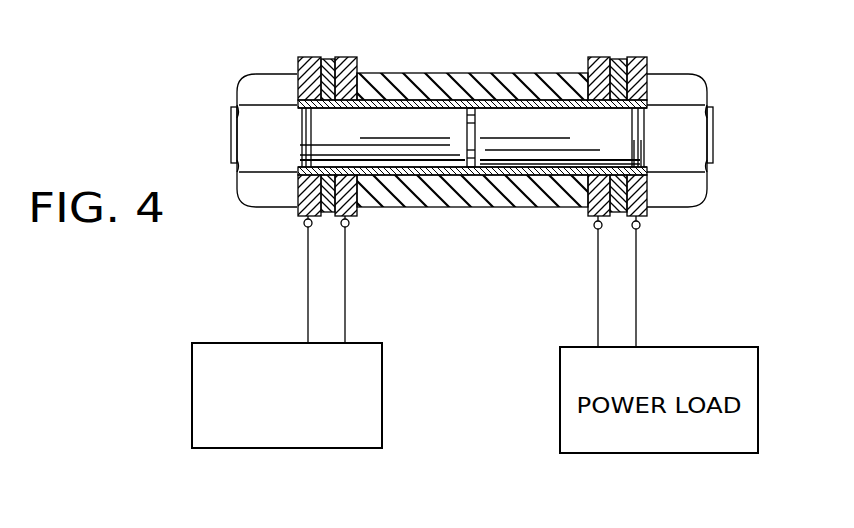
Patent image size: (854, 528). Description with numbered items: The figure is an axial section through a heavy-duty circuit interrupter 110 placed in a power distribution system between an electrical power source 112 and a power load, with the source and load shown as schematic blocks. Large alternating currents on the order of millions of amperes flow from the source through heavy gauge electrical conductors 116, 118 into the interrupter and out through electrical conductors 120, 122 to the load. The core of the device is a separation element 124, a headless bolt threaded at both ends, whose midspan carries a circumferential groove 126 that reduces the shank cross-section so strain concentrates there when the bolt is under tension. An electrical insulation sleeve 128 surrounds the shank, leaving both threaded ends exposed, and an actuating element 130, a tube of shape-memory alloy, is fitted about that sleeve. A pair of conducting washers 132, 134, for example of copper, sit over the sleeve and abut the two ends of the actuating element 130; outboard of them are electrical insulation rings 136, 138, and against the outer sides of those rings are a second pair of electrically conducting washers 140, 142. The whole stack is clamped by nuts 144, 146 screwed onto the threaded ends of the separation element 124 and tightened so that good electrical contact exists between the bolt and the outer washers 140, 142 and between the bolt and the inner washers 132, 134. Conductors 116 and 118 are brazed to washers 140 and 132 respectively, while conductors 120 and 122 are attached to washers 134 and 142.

The heavy-duty circuit interrupter 110 is at (509, 63).
The electrical power source 112 is at (240, 343).
The electrical conductor 116 is at (308, 285).
The electrical conductor 118 is at (345, 298).
The electrical conductor 120 is at (598, 285).
The electrical conductor 122 is at (636, 310).
The separation element 124 is at (393, 175).
The circumferential groove 126 is at (467, 128).
The electrical insulation sleeve 128 is at (530, 178).
The actuating element 130 is at (456, 73).
The washer 132 is at (368, 38).
The washer 134 is at (590, 57).
The electrical insulation ring 136 is at (329, 58).
The electrical insulation ring 138 is at (616, 57).
The electrically conducting washer 140 is at (292, 212).
The electrically conducting washer 142 is at (650, 218).
The nut 144 is at (258, 78).
The nut 146 is at (680, 80).